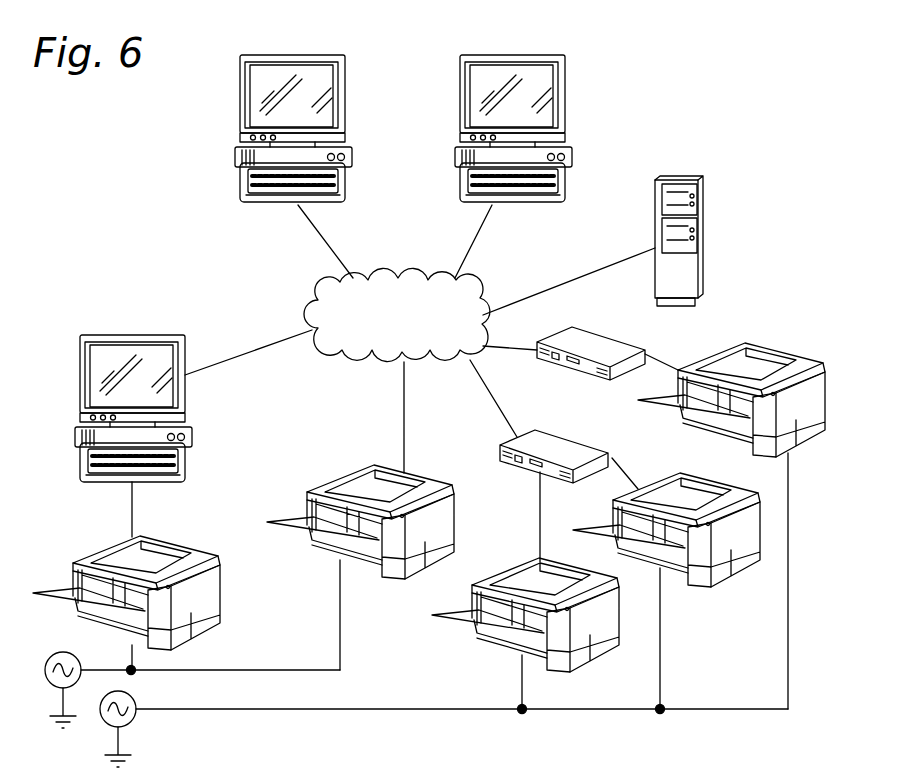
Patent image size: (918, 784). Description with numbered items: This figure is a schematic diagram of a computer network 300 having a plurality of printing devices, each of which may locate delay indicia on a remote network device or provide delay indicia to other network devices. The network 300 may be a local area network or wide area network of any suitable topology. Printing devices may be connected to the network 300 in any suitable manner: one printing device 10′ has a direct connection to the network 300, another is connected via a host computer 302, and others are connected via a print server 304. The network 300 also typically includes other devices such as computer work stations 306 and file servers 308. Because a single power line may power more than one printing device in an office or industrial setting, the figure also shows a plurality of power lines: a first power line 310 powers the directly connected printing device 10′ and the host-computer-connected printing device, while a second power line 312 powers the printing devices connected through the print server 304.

The network 300 is at (107, 187).
The host computer 302 is at (123, 335).
The print server 304 is at (588, 330).
The computer work station 306 is at (345, 98).
The file server 308 is at (703, 222).
The printing device with direct connection 10′ is at (406, 468).
The first power line 310 is at (258, 671).
The second power line 312 is at (258, 710).